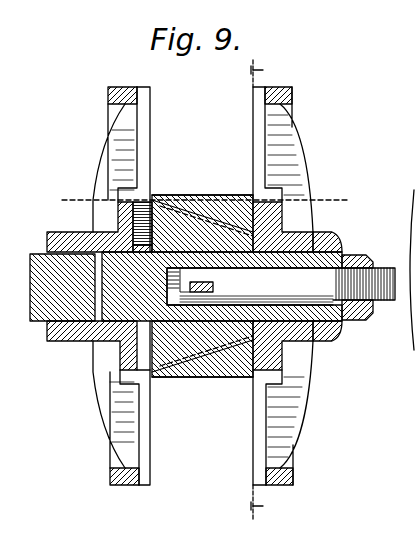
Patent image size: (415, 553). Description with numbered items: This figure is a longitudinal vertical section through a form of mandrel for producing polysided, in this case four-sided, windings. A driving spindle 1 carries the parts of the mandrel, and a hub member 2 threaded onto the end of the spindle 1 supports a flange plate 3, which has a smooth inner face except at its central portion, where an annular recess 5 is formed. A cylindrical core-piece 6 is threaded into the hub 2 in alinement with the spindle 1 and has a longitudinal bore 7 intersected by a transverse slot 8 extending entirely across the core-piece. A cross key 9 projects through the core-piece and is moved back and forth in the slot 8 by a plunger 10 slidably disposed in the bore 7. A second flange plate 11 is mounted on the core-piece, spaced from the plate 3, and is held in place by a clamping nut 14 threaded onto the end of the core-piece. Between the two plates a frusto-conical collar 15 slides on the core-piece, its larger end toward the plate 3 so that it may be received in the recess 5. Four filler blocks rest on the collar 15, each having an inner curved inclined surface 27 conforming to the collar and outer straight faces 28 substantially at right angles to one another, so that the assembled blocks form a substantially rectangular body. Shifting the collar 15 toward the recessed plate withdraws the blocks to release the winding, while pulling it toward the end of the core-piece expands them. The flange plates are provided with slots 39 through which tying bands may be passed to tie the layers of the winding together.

The spindle 1 is at (58, 232).
The hub member 2 is at (61, 342).
The flange plate 3 is at (108, 156).
The annular recess 5 is at (128, 217).
The core-piece 6 is at (114, 342).
The longitudinal bore 7 is at (250, 270).
The transverse slot 8 is at (187, 288).
The cross key 9 is at (211, 291).
The plunger 10 is at (381, 270).
The second flange plate 11 is at (303, 181).
The clamping nut 14 is at (268, 300).
The collar 15 is at (180, 226).
The inner curved inclined surface 27 is at (238, 232).
The outer straight faces 28 is at (221, 195).
The slots 39 is at (150, 150).